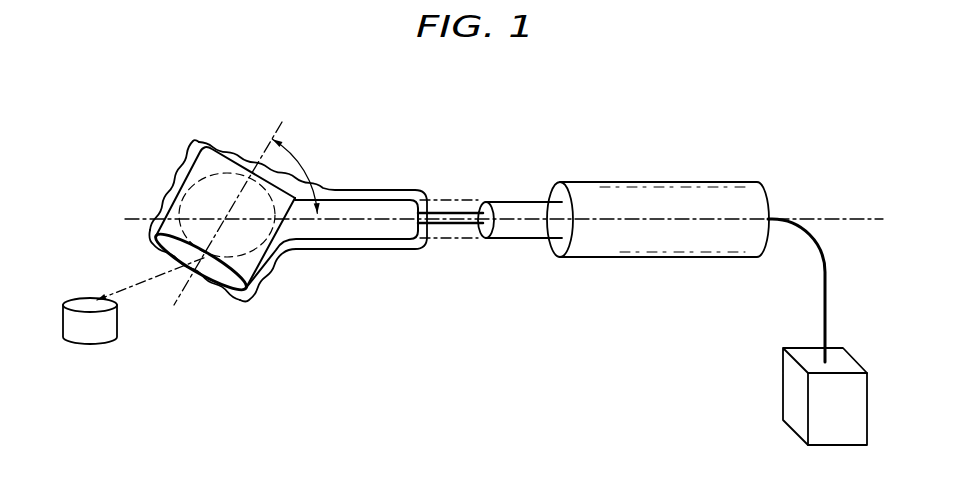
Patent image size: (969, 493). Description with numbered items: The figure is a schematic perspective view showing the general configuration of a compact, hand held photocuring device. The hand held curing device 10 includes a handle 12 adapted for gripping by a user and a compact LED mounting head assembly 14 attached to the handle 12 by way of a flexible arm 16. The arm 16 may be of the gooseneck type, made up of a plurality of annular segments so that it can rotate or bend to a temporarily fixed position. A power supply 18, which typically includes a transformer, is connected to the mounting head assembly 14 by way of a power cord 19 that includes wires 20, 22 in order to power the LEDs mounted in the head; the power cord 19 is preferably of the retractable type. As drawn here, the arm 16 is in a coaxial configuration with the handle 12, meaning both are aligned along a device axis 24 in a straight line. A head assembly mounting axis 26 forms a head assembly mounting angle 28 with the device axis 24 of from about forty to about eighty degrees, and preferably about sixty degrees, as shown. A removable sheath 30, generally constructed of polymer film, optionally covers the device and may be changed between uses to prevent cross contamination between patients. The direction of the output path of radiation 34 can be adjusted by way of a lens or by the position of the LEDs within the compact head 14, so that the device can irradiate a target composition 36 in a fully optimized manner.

The hand held curing device 10 is at (676, 88).
The handle 12 is at (644, 183).
The compact LED mounting head assembly 14 is at (208, 131).
The flexible arm 16 is at (372, 171).
The power supply 18 is at (868, 407).
The power cord 19 is at (827, 308).
The wire 20 is at (463, 210).
The wire 22 is at (456, 230).
The device axis 24 is at (127, 214).
The head assembly mounting axis 26 is at (258, 157).
The head assembly mounting angle 28 is at (300, 156).
The removable sheath 30 is at (188, 163).
The output path of radiation 34 is at (130, 288).
The target composition 36 is at (72, 301).